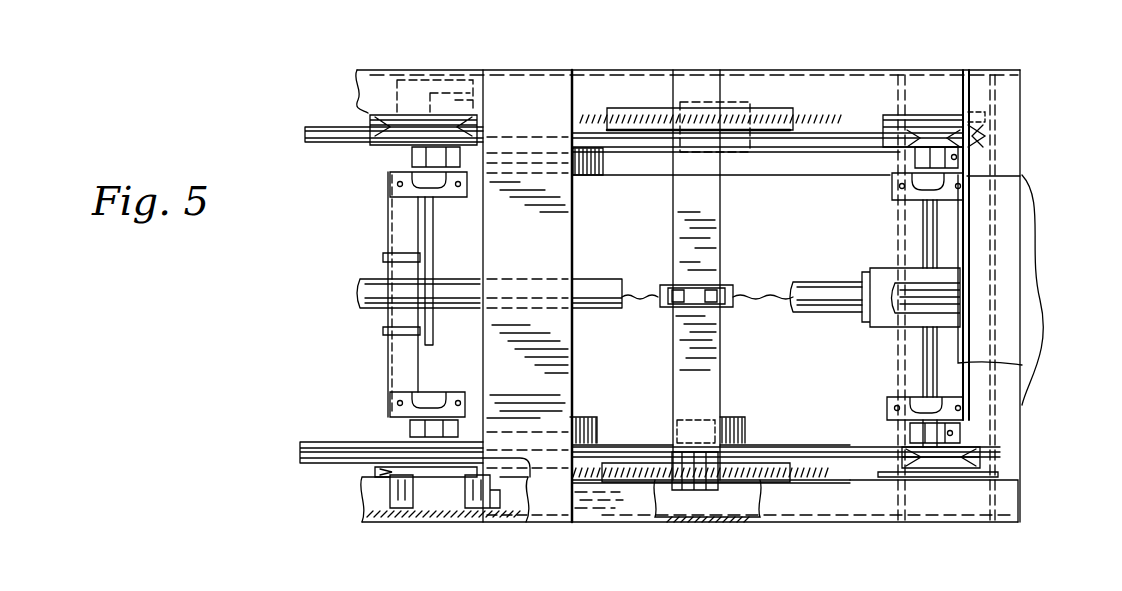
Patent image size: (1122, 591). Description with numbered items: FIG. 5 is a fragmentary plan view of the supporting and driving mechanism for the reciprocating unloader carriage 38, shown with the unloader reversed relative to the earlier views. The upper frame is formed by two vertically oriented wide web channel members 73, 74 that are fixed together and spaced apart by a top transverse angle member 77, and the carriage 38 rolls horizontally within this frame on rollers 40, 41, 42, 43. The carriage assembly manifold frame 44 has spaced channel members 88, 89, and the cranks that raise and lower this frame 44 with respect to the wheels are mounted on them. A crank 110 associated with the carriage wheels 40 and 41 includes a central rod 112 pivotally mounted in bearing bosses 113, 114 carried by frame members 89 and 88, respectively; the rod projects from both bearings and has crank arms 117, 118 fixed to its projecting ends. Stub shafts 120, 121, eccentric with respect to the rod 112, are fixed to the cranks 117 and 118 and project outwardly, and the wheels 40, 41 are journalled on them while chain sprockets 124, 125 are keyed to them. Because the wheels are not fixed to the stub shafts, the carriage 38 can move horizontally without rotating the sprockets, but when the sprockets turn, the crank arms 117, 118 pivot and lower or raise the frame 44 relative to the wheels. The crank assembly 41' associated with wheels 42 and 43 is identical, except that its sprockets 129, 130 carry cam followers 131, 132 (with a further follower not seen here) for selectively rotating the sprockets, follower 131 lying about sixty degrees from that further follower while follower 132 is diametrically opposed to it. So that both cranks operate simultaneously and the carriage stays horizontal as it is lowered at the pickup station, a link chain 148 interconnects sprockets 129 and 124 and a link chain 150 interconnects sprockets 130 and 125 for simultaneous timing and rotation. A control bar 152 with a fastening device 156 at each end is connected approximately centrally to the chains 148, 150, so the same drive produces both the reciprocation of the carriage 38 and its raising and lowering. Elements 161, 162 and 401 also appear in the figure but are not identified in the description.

The unloader carriage 38 is at (861, 475).
The carriage wheel 40 is at (923, 460).
The carriage wheel 41 is at (905, 172).
The crank assembly 41' is at (458, 294).
The carriage wheel 42 is at (417, 122).
The carriage wheel 43 is at (405, 438).
The carriage assembly manifold frame 44 is at (837, 462).
The wide web channel member 73 is at (540, 68).
The wide web channel member 74 is at (610, 523).
The top transverse angle member 77 is at (1008, 223).
The channel member 88 is at (612, 437).
The channel member 89 is at (592, 153).
The crank 110 is at (953, 247).
The central rod 112 is at (927, 338).
The bearing boss 113 is at (945, 197).
The bearing boss 114 is at (957, 408).
The crank arm 117 is at (943, 152).
The crank arm 118 is at (945, 440).
The stub shaft 120 is at (980, 107).
The stub shaft 121 is at (945, 438).
The chain sprocket 124 is at (907, 115).
The chain sprocket 125 is at (880, 477).
The sprocket 129 is at (450, 118).
The sprocket 130 is at (387, 470).
The cam follower 131 is at (400, 507).
The cam follower 132 is at (475, 507).
The link chain 148 is at (853, 113).
The link chain 150 is at (813, 470).
The control bar 152 is at (700, 238).
The fastening device 156 is at (703, 517).
The turnbuckle wire 161 is at (638, 290).
The turnbuckle wire 162 is at (768, 297).
The vertical rod 401 is at (907, 263).